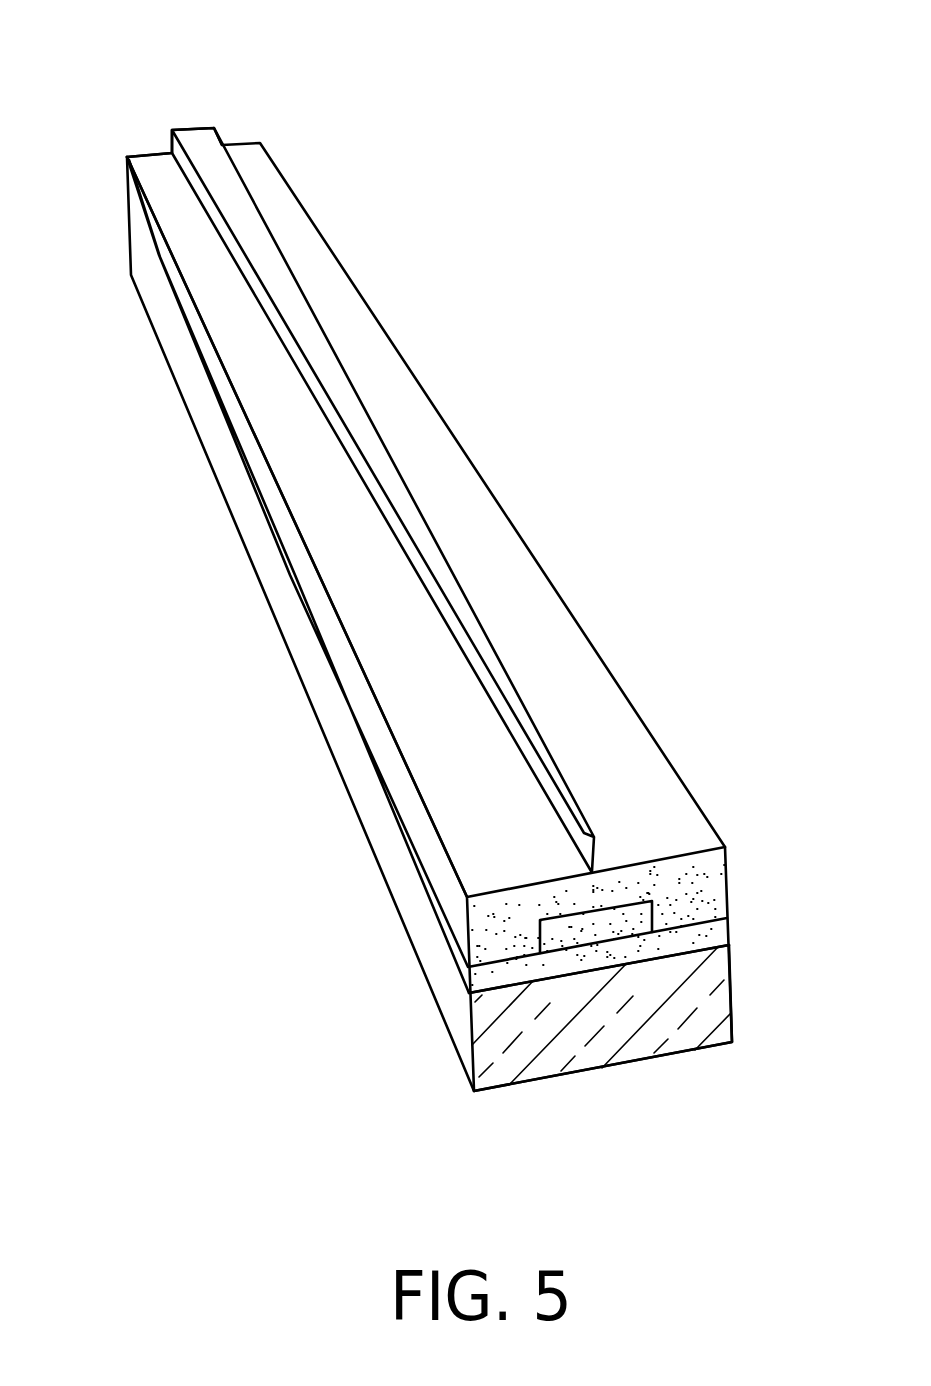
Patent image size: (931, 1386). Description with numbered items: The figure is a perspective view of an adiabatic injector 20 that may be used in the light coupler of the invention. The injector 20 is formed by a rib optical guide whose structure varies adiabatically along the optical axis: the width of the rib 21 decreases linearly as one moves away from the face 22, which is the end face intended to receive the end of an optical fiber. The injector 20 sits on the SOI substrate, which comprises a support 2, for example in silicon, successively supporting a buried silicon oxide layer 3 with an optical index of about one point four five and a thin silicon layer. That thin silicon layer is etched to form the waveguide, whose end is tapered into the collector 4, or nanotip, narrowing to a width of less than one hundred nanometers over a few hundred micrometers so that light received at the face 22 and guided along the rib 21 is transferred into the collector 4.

The support 2 is at (712, 1005).
The silicon oxide layer 3 is at (712, 933).
The collector 4 is at (613, 913).
The injector 20 is at (412, 362).
The rib 21 is at (197, 143).
The face 22 is at (125, 152).